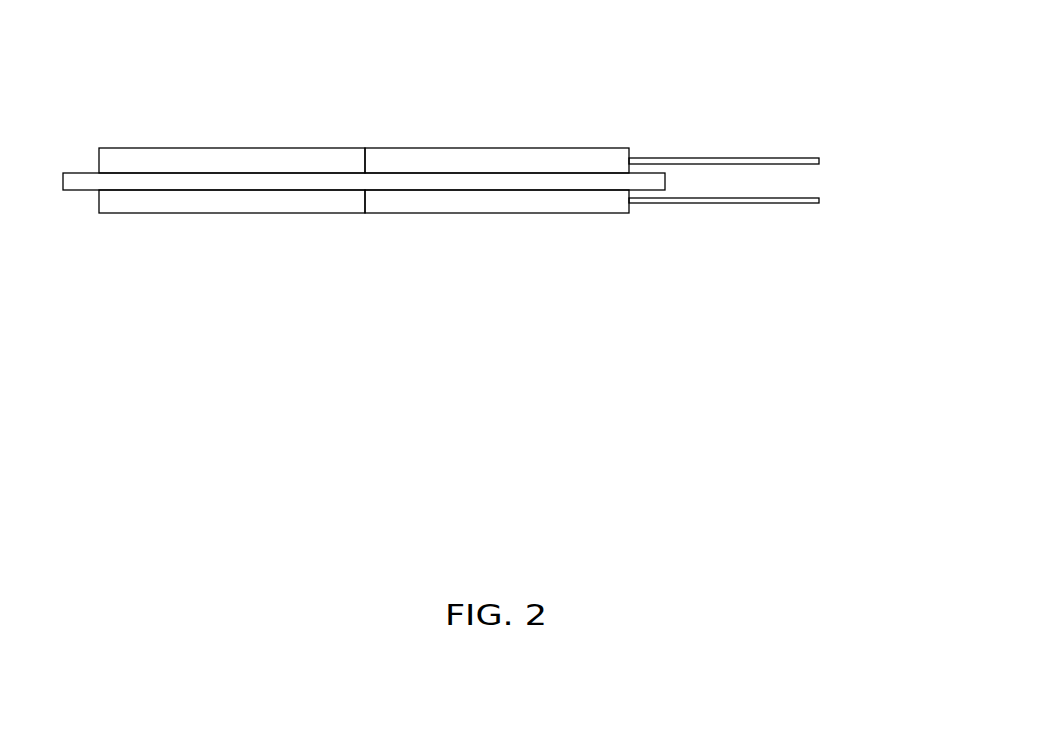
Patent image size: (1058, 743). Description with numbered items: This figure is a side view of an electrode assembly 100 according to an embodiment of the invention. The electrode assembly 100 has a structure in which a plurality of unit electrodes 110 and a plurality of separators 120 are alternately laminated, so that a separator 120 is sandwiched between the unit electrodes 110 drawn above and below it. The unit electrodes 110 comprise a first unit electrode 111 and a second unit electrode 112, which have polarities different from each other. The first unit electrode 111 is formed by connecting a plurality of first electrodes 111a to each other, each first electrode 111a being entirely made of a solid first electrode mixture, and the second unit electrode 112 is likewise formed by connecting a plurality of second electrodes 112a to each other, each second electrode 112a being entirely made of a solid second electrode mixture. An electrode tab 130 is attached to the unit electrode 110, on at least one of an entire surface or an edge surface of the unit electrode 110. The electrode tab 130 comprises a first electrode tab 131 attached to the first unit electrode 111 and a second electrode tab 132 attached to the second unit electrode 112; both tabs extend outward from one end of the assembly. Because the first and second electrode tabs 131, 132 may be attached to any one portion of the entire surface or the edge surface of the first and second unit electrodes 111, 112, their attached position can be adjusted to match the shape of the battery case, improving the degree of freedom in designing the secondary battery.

The electrode assembly 100 is at (193, 78).
The unit electrode 110 is at (840, 305).
The first unit electrode 111 is at (457, 65).
The first electrode 111a is at (290, 155).
The second unit electrode 112 is at (457, 293).
The second electrode 112a is at (295, 203).
The separator 120 is at (73, 180).
The electrode tab 130 is at (905, 116).
The first electrode tab 131 is at (797, 162).
The second electrode tab 132 is at (810, 204).